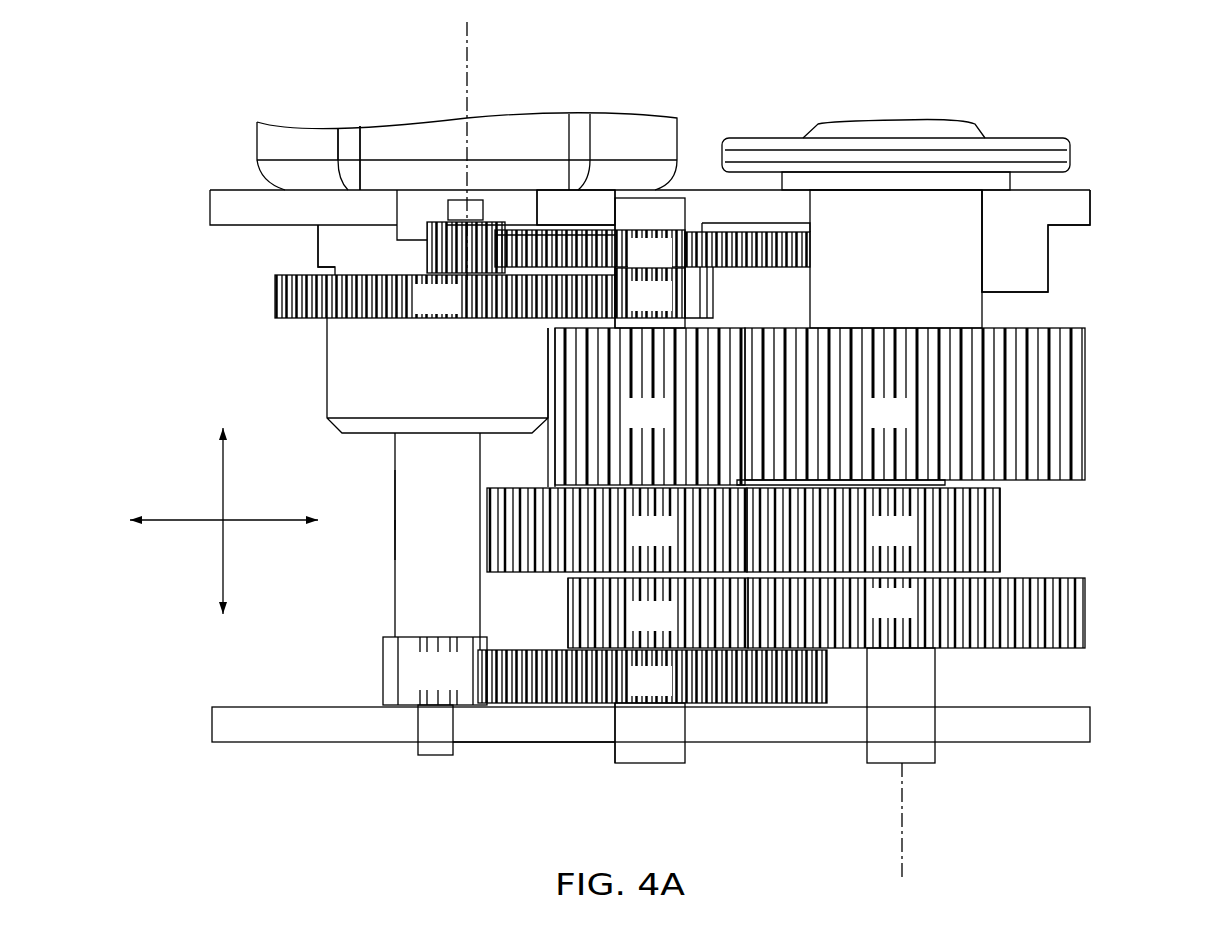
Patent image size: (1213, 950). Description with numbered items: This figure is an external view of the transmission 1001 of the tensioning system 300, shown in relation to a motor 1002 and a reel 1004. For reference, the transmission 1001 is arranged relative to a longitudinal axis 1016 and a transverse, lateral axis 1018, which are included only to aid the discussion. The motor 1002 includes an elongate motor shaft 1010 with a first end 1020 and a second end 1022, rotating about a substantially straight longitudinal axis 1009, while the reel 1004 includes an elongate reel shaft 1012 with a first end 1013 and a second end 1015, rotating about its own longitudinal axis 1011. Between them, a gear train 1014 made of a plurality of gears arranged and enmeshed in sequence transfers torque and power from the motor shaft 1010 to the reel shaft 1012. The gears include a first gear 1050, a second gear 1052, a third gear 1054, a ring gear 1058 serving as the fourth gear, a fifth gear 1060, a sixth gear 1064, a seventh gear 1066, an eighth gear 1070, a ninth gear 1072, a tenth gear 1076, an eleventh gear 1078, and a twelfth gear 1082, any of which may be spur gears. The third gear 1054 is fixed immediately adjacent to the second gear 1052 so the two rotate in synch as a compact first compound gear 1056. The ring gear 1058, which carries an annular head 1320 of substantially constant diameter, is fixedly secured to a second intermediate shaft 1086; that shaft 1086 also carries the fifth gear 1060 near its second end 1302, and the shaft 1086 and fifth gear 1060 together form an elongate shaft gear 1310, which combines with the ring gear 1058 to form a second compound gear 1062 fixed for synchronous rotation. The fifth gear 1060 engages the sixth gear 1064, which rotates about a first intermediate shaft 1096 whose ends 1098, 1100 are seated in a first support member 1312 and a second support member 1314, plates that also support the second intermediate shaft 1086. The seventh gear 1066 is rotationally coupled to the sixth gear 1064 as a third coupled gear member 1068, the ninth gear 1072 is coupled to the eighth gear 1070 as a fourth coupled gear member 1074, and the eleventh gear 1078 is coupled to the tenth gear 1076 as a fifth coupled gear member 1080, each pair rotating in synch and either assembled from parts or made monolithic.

The tensioning system 300 is at (220, 86).
The transmission 1001 is at (1122, 388).
The motor 1002 is at (268, 174).
The reel 1004 is at (1062, 158).
The longitudinal axis 1009 is at (470, 78).
The motor shaft 1010 is at (447, 213).
The longitudinal axis 1011 is at (905, 820).
The reel shaft 1012 is at (950, 315).
The first end 1013 is at (950, 207).
The gear train 1014 is at (535, 768).
The second end 1015 is at (912, 695).
The longitudinal axis 1016 is at (225, 468).
The lateral axis 1018 is at (253, 522).
The first end 1020 is at (480, 217).
The second end 1022 is at (397, 240).
The first gear 1050 is at (470, 250).
The second gear 1052 is at (668, 265).
The third gear 1054 is at (668, 308).
The first compound gear 1056 is at (720, 273).
The ring gear 1058 is at (454, 311).
The fifth gear 1060 is at (454, 685).
The second compound gear 1062 is at (393, 500).
The sixth gear 1064 is at (668, 693).
The seventh gear 1066 is at (668, 628).
The third coupled gear member 1068 is at (563, 642).
The eighth gear 1070 is at (911, 615).
The ninth gear 1072 is at (911, 543).
The fourth coupled gear member 1074 is at (1008, 568).
The tenth gear 1076 is at (668, 543).
The eleventh gear 1078 is at (668, 425).
The fifth coupled gear member 1080 is at (552, 486).
The twelfth gear 1082 is at (911, 425).
The second intermediate shaft 1086 is at (420, 541).
The first intermediate shaft 1096 is at (640, 735).
The end 1098 is at (650, 765).
The end 1100 is at (678, 206).
The second end 1302 is at (440, 748).
The elongate shaft gear 1310 is at (420, 577).
The first support member 1312 is at (285, 742).
The second support member 1314 is at (323, 203).
The head 1320 is at (335, 385).